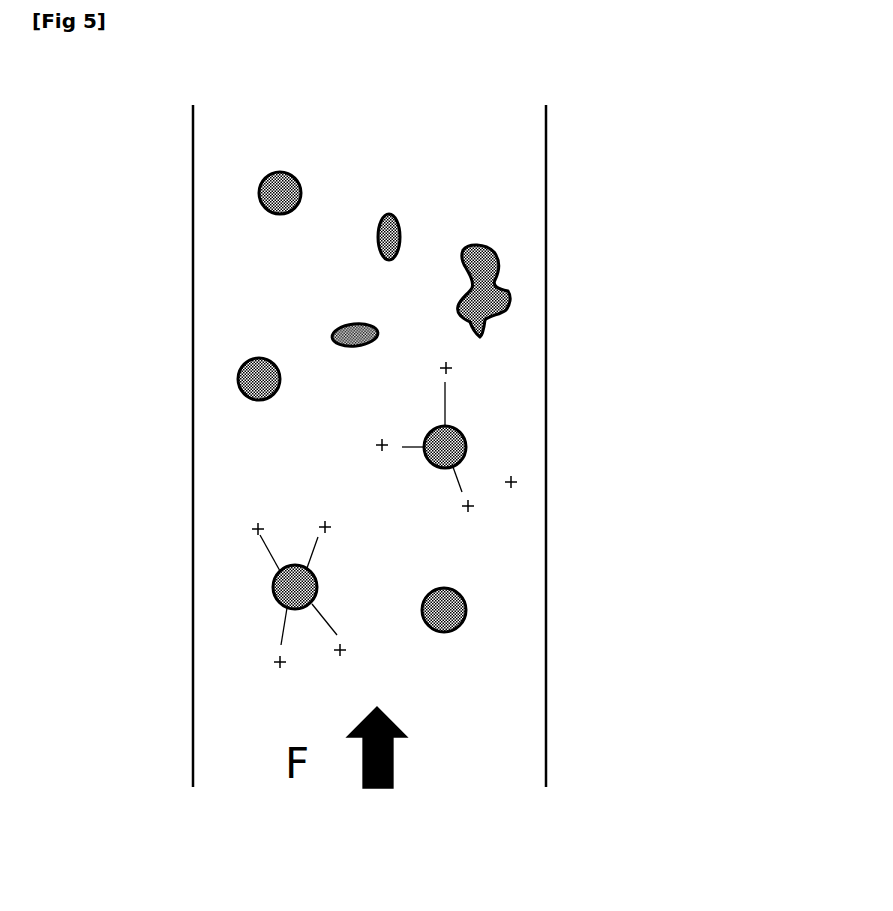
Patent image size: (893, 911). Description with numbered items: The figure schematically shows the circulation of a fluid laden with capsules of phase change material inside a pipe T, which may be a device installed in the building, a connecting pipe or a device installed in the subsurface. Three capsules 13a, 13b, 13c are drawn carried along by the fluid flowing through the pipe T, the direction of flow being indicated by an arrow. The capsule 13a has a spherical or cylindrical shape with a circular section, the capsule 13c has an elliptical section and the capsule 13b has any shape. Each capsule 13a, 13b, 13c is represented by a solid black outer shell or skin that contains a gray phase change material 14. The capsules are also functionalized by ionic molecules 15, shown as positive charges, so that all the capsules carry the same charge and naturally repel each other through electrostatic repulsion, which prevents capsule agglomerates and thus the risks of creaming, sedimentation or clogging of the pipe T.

The capsule 13a is at (262, 189).
The phase change material 14 is at (264, 197).
The capsule 13b is at (513, 292).
The capsule 13c is at (378, 345).
The ionic molecules 15 is at (473, 450).
The pipe T is at (548, 575).